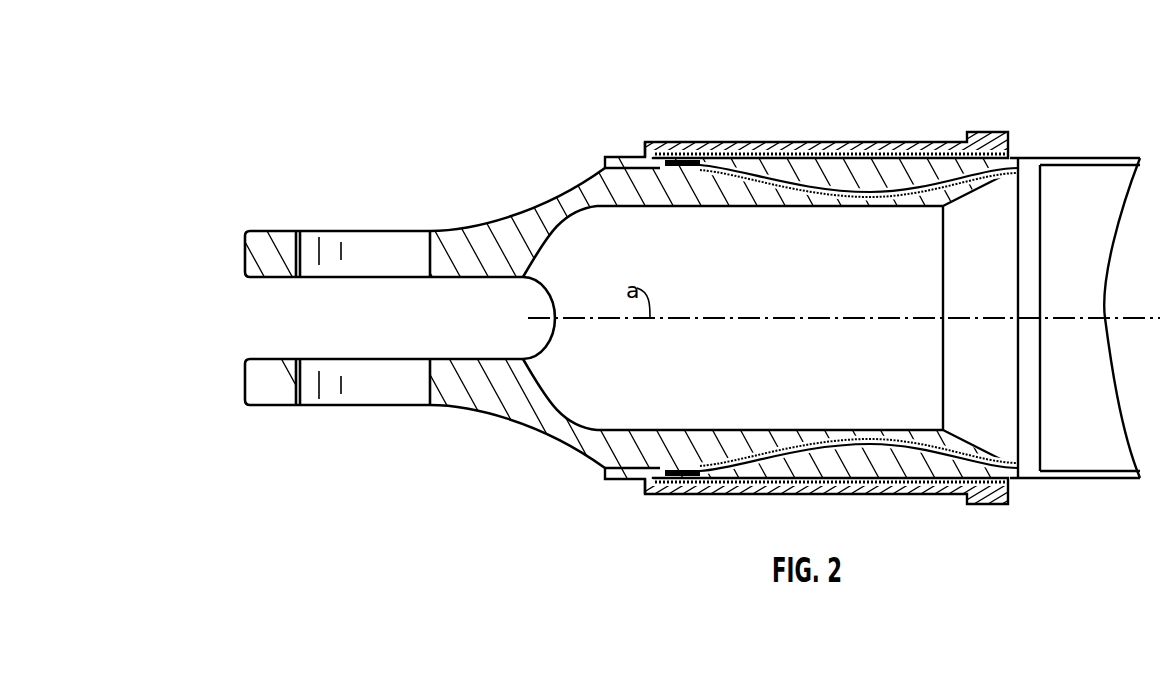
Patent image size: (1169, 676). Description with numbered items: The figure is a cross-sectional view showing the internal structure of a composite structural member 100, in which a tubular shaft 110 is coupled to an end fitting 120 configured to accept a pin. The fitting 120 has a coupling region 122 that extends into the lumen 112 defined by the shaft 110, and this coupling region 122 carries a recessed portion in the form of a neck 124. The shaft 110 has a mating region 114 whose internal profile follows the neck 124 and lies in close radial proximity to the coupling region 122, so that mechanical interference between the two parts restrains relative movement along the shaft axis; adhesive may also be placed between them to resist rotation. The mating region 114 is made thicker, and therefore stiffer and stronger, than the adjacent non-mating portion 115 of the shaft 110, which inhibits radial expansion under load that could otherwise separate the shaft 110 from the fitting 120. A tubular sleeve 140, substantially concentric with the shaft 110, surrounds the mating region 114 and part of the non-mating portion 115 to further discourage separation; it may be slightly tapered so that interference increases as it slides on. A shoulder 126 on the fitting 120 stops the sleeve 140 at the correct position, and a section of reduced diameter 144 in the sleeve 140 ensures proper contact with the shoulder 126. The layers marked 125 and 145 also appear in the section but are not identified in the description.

The composite structural member 100 is at (500, 107).
The tubular shaft 110 is at (1074, 315).
The lumen 112 is at (1093, 267).
The mating region 114 is at (825, 458).
The non-mating portion 115 is at (1085, 480).
The end fitting 120 is at (659, 320).
The coupling region 122 is at (558, 420).
The neck 124 is at (823, 208).
The strength member layer 125 is at (898, 445).
The shoulder 126 is at (660, 153).
The sleeve 140 is at (838, 283).
The section of reduced diameter 144 is at (613, 157).
The shell liner layer 145 is at (908, 148).